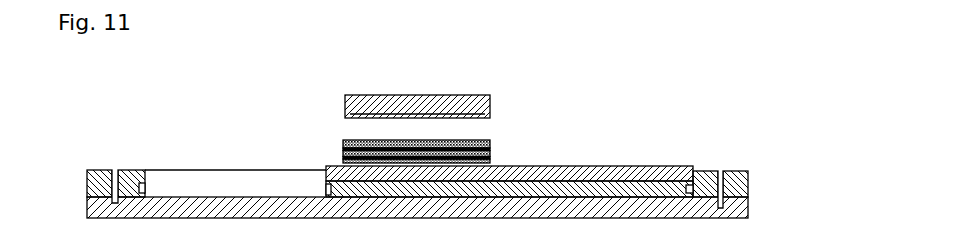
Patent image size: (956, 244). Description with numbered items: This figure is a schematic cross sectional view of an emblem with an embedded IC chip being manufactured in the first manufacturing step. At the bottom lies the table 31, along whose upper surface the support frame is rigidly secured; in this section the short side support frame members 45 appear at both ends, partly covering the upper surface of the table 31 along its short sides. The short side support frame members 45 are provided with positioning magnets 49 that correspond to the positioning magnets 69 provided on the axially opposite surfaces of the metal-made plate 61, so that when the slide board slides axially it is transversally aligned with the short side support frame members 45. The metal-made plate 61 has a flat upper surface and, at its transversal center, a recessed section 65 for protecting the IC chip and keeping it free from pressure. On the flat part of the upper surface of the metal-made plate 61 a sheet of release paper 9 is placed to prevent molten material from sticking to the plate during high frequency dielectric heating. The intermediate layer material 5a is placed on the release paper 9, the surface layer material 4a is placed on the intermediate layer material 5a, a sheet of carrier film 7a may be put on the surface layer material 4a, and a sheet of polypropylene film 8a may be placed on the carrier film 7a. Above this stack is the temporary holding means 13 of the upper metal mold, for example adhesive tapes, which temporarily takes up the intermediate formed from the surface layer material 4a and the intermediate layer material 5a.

The table 31 is at (742, 211).
The short side support frame member 45 is at (95, 168).
The positioning magnet 49 is at (143, 189).
The positioning magnet 69 is at (322, 190).
The recessed section 65 is at (598, 165).
The metal-made plate 61 is at (644, 165).
The temporary holding means 13 is at (490, 109).
The polypropylene film 8a is at (490, 141).
The carrier film 7a is at (343, 148).
The surface layer material 4a is at (490, 153).
The intermediate layer material 5a is at (343, 158).
The release paper 9 is at (490, 160).